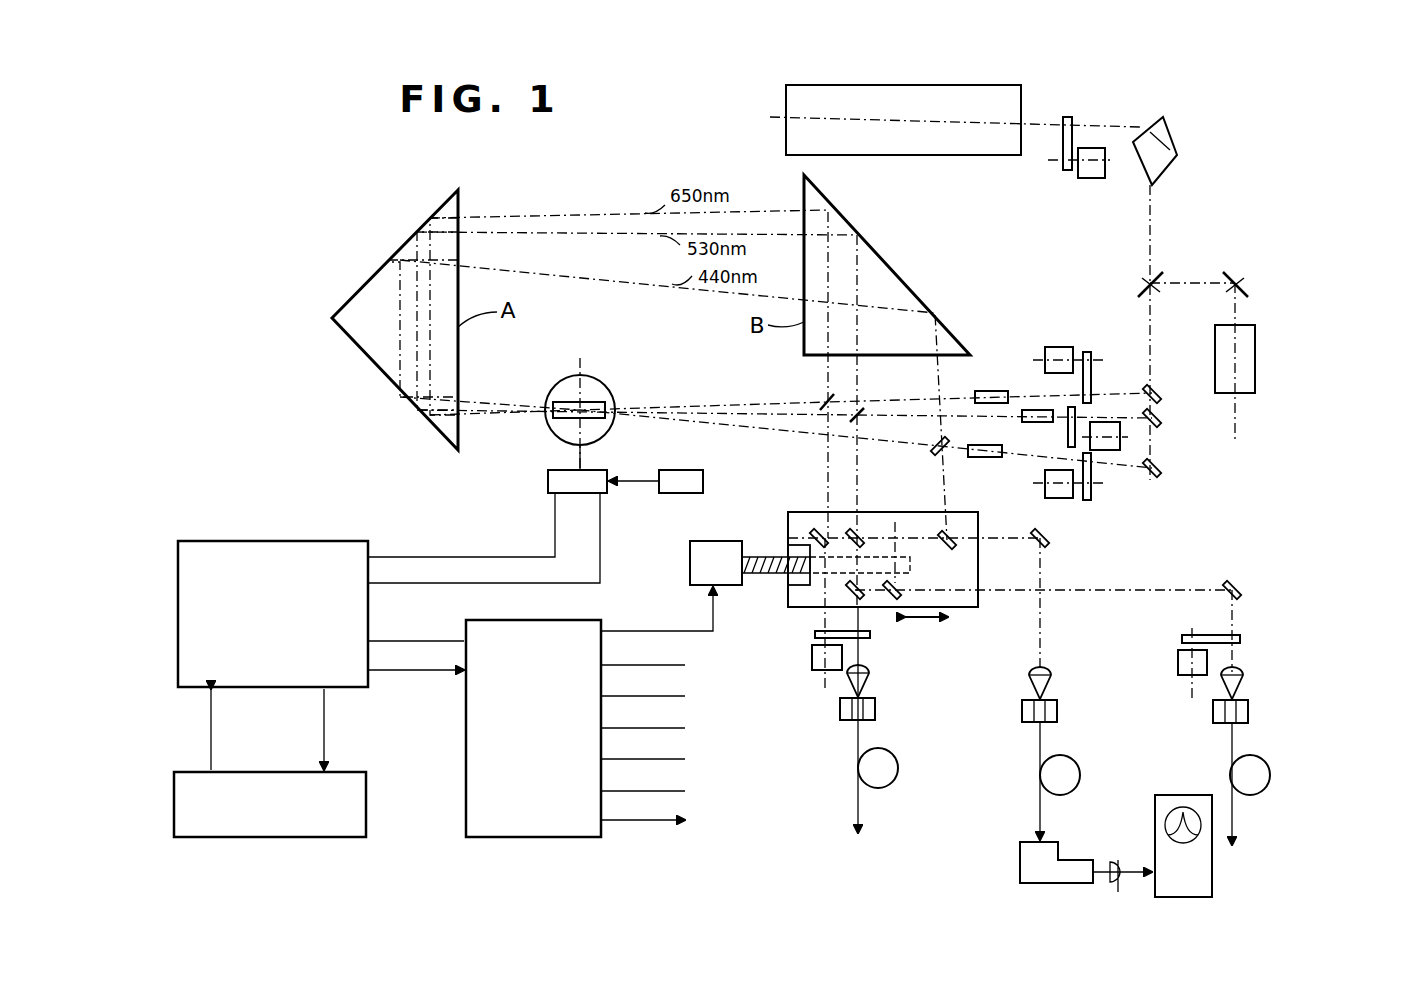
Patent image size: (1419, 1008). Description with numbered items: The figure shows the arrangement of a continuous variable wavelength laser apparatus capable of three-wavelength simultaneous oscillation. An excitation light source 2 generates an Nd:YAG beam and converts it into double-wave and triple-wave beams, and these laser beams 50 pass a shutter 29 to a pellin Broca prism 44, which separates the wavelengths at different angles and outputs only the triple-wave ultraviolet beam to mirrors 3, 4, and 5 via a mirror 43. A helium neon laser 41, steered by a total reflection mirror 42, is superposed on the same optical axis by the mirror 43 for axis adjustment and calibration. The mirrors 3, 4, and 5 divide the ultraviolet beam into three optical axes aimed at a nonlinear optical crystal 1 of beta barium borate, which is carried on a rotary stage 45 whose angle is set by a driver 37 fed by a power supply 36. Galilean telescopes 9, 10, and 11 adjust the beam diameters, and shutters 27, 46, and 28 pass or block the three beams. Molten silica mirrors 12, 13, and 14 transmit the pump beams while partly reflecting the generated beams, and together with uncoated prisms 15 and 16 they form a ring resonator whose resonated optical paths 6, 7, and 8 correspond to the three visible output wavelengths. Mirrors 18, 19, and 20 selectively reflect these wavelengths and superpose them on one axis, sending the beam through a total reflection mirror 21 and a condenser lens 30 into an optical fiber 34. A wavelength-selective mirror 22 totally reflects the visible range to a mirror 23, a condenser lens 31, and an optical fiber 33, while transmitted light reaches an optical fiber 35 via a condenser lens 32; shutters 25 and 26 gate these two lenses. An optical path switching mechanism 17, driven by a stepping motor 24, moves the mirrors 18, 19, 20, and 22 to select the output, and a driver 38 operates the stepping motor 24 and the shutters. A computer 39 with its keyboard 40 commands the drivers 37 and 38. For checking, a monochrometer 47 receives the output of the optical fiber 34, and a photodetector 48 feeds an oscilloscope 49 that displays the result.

The nonlinear optical crystal 1 is at (598, 406).
The excitation light source 2 is at (955, 157).
The mirror 3 is at (1162, 470).
The mirror 4 is at (1162, 420).
The mirror 5 is at (1145, 388).
The optical path 6 is at (755, 430).
The optical path 7 is at (692, 415).
The optical path 8 is at (706, 402).
The Galilean telescope 9 is at (978, 458).
The Galilean telescope 10 is at (1038, 422).
The Galilean telescope 11 is at (990, 390).
The mirror 12 is at (938, 455).
The mirror 13 is at (860, 412).
The mirror 14 is at (822, 402).
The prism 15 is at (398, 378).
The prism 16 is at (912, 285).
The optical path switching mechanism 17 is at (958, 608).
The mirror 18 is at (952, 548).
The mirror 19 is at (852, 532).
The mirror 20 is at (812, 530).
The total reflection mirror 21 is at (1048, 545).
The mirror having wavelength selectivity 22 is at (845, 592).
The mirror 23 is at (1236, 580).
The stepping motor 24 is at (720, 540).
The shutter 25 is at (1178, 662).
The shutter 26 is at (815, 672).
The shutter 27 is at (1062, 500).
The shutter 28 is at (1058, 347).
The shutter 29 is at (1092, 180).
The condenser lens 30 is at (1042, 672).
The condenser lens 31 is at (1242, 680).
The condenser lens 32 is at (870, 680).
The optical fiber 33 is at (1235, 822).
The optical fiber 34 is at (1038, 800).
The optical fiber 35 is at (858, 797).
The power supply 36 is at (680, 493).
The driver 37 is at (548, 481).
The driver 38 is at (590, 620).
The computer 39 is at (327, 541).
The keyboard 40 is at (350, 837).
The helium neon laser 41 is at (1255, 365).
The total reflection mirror 42 is at (1240, 278).
The mirror 43 is at (1140, 290).
The pellin Broca prism 44 is at (1175, 140).
The rotary stage 45 is at (560, 378).
The shutter 46 is at (1105, 452).
The monochrometer 47 is at (1020, 865).
The photodetector 48 is at (1112, 860).
The oscilloscope 49 is at (1212, 873).
The laser beams 50 is at (1110, 125).